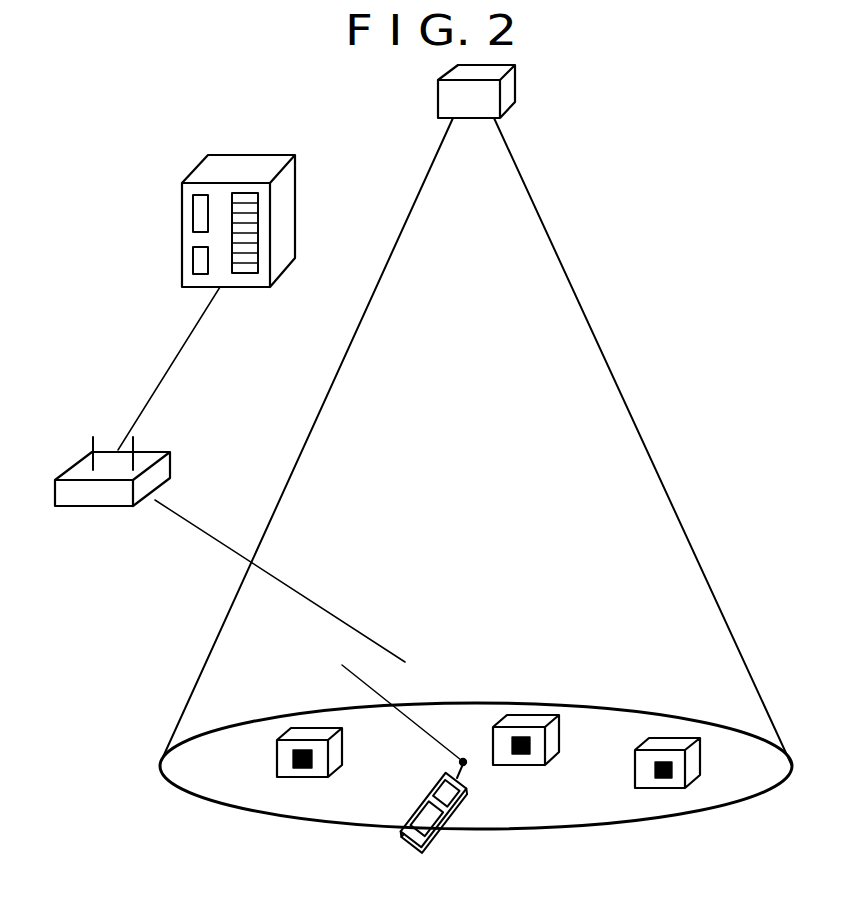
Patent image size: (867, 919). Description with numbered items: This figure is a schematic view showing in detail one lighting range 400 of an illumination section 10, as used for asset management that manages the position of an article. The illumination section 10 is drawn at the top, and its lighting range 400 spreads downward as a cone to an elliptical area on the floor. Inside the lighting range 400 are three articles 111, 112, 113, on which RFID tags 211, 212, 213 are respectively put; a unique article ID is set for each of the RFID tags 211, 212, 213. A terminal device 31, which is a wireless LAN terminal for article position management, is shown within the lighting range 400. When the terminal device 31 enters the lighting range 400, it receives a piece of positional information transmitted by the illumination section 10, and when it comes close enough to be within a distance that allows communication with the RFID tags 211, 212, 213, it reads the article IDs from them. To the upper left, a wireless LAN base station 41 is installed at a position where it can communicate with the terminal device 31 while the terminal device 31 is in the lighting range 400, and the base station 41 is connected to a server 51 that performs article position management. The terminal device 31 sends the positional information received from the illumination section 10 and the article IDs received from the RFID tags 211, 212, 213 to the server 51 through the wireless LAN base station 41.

The illumination section 10 is at (516, 95).
The server 51 is at (182, 225).
The wireless LAN base station 41 is at (143, 452).
The lighting range 400 is at (640, 458).
The article 111 is at (304, 728).
The article 112 is at (522, 715).
The article 113 is at (668, 738).
The RFID tag 211 is at (306, 770).
The RFID tag 212 is at (520, 762).
The RFID tag 213 is at (650, 773).
The terminal device 31 is at (425, 783).